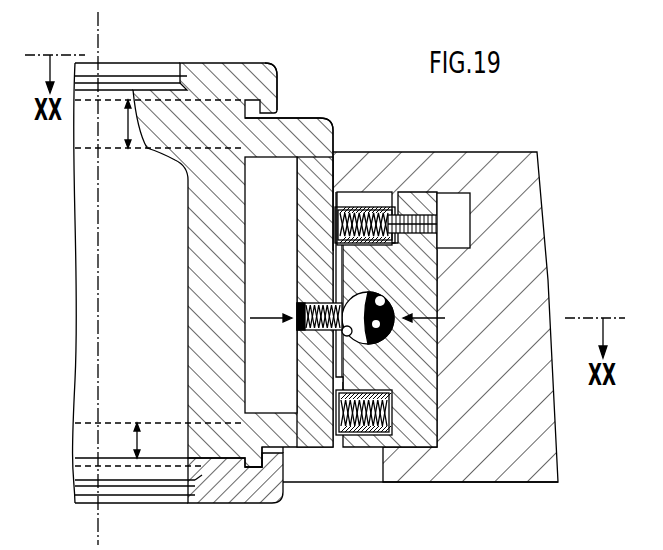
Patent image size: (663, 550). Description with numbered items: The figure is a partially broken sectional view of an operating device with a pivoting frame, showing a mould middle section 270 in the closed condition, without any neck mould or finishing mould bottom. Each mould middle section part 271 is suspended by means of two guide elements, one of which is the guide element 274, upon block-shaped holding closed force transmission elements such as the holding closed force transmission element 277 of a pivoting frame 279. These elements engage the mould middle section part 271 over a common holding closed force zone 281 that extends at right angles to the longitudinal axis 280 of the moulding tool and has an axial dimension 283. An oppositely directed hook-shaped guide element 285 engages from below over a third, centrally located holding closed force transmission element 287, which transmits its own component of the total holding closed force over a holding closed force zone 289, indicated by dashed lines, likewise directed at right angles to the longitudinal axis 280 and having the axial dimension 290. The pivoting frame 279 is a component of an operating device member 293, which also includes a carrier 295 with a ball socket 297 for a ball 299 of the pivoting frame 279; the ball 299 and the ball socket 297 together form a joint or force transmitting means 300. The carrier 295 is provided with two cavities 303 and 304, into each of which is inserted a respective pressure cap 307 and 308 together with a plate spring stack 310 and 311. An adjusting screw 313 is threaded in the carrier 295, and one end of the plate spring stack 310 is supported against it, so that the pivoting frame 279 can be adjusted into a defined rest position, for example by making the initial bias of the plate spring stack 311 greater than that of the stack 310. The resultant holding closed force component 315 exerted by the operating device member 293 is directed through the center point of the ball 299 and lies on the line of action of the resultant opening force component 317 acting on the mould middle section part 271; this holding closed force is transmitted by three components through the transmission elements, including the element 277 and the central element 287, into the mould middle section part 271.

The mould middle section 270 is at (256, 508).
The mould middle section part 271 is at (204, 505).
The guide element 274 is at (278, 103).
The holding closed force transmission element 277 is at (249, 107).
The pivoting frame 279 is at (336, 127).
The longitudinal axis 280 is at (101, 27).
The holding closed force zone 281 is at (117, 150).
The axial dimension 283 is at (127, 106).
The hook-shaped guide element 285 is at (275, 487).
The holding closed force transmission element 287 is at (256, 443).
The holding closed force zone 289 is at (165, 422).
The axial dimension 290 is at (137, 437).
The operating device member 293 is at (485, 488).
The carrier 295 is at (367, 183).
The ball socket 297 is at (347, 336).
The ball 299 is at (370, 302).
The force transmitting means 300 is at (336, 297).
The cavity 303 is at (420, 190).
The cavity 304 is at (395, 428).
The pressure cap 307 is at (337, 204).
The pressure cap 308 is at (340, 420).
The plate spring stack 310 is at (337, 230).
The plate spring stack 311 is at (363, 424).
The adjusting screw 313 is at (444, 222).
The resultant holding closed force component 315 is at (432, 318).
The resultant opening force component 317 is at (251, 319).